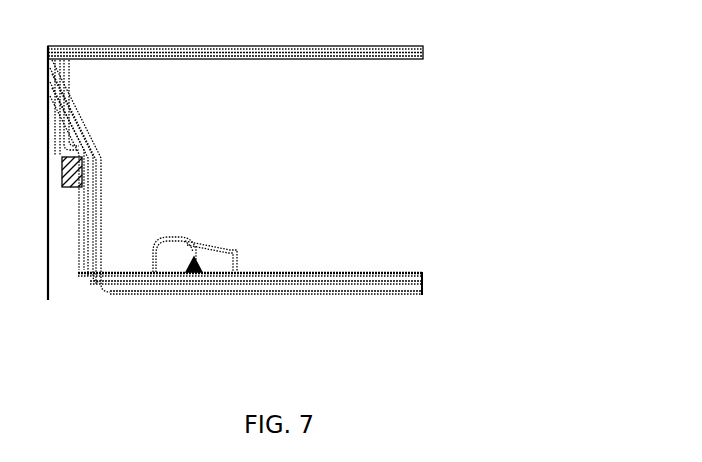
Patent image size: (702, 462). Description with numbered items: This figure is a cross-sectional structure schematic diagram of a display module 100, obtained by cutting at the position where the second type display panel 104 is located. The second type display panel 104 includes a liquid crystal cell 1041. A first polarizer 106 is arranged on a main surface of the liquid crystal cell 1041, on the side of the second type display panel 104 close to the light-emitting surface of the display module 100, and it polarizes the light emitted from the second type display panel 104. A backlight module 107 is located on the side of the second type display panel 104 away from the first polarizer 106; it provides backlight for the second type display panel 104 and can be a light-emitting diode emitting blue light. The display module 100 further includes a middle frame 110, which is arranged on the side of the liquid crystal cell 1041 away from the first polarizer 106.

The display module 100 is at (309, 175).
The second type display panel 104 is at (309, 60).
The liquid crystal cell 1041 is at (423, 53).
The first polarizer 106 is at (423, 46).
The backlight module 107 is at (194, 266).
The middle frame 110 is at (90, 137).